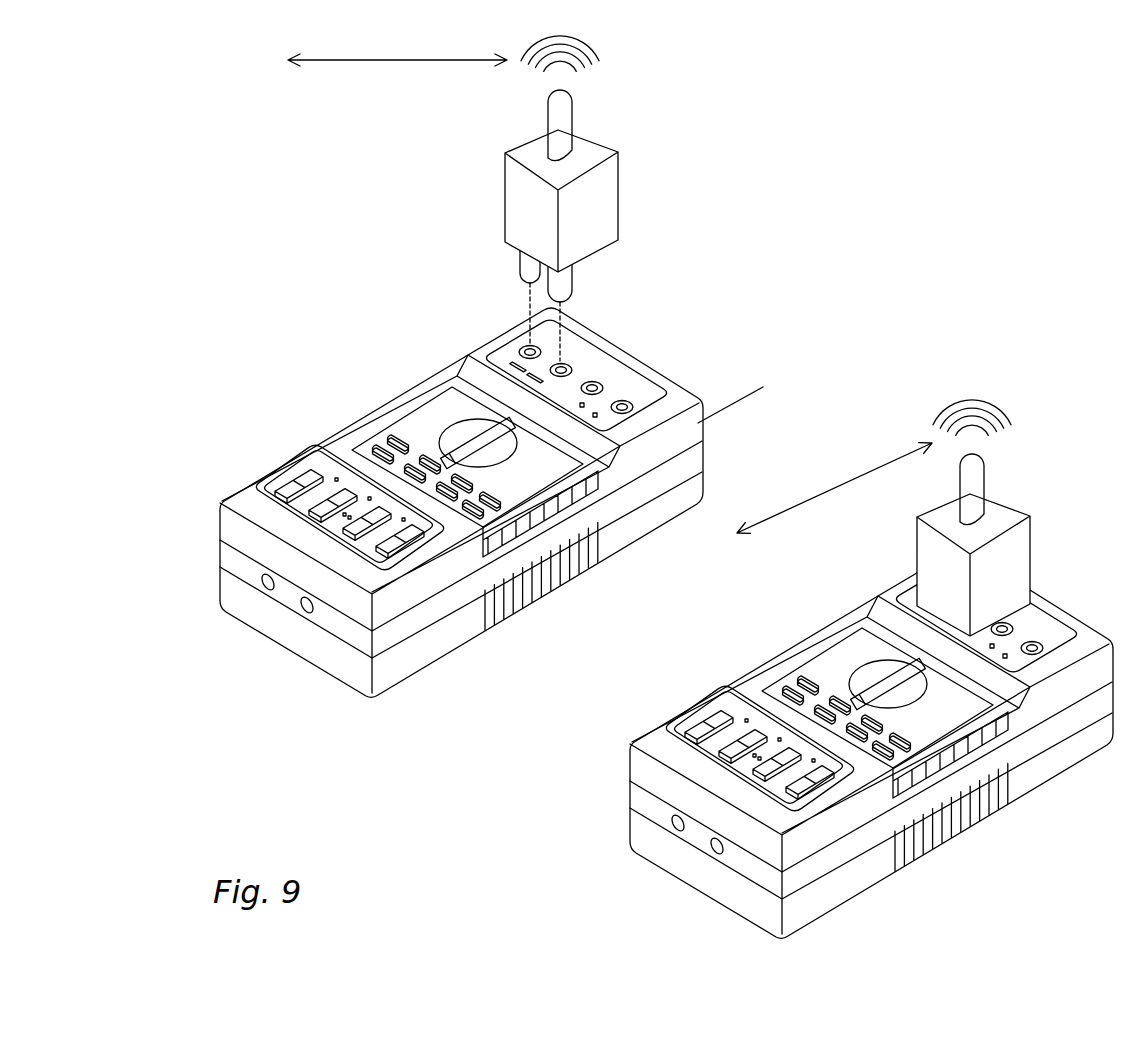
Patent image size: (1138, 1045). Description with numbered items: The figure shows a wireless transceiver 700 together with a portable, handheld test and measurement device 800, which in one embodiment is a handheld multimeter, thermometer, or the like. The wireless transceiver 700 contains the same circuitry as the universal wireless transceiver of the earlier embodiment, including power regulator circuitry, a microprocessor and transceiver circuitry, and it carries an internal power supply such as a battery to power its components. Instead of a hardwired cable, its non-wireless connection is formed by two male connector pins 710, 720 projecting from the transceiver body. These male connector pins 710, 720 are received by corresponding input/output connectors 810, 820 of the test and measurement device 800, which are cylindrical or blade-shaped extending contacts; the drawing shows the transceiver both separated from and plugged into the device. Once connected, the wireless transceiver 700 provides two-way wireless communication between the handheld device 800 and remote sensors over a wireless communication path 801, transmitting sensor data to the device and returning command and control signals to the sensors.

The wireless transceiver 700 is at (607, 198).
The male connector pin 710 is at (520, 265).
The male connector pin 720 is at (573, 283).
The test and measurement device 800 is at (700, 487).
The wireless communication path 801 is at (380, 62).
The input/output connector 810 is at (527, 350).
The input/output connector 820 is at (567, 368).